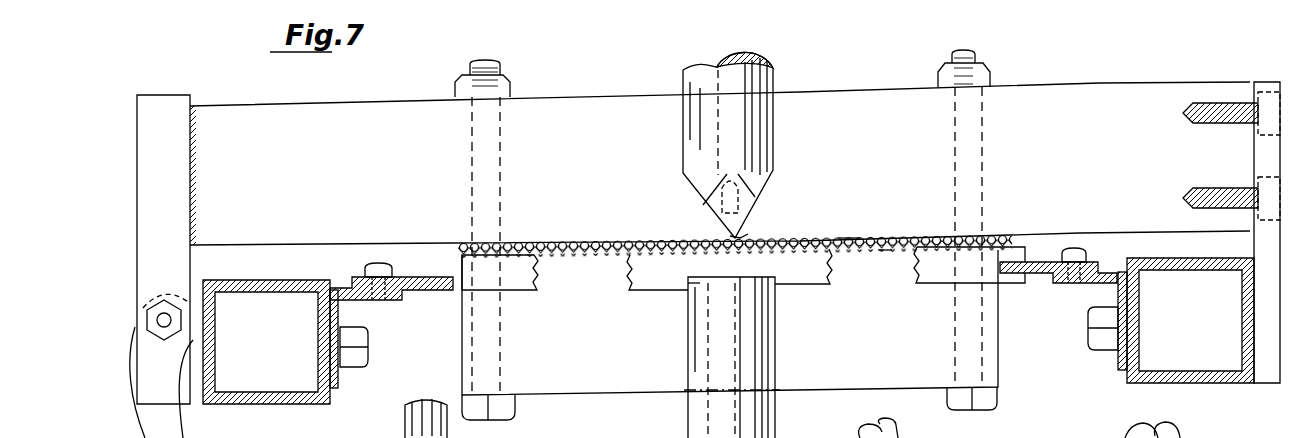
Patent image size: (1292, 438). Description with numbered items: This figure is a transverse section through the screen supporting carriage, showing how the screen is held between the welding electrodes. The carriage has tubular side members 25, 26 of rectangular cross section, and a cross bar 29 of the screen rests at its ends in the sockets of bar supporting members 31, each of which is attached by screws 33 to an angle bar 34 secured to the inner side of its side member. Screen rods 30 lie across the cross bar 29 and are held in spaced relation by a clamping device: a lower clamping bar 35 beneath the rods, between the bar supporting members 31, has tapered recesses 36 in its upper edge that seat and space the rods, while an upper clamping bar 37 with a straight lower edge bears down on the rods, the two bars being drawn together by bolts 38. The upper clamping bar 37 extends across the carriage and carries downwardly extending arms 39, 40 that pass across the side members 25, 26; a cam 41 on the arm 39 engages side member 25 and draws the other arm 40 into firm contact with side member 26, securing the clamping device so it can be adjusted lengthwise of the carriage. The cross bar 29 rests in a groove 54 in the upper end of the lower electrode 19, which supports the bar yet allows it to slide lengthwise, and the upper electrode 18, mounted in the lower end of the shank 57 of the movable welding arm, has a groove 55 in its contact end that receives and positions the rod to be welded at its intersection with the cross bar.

The upper electrode 18 is at (775, 135).
The lower electrode 19 is at (777, 325).
The side member 25 is at (305, 404).
The side member 26 is at (1190, 383).
The cross bar 29 is at (1008, 250).
The screen rod 30 is at (850, 238).
The bar supporting member 31 is at (425, 295).
The screw 33 is at (378, 263).
The angle bar 34 is at (1105, 288).
The clamping bar 35 is at (578, 380).
The tapered recess 36 is at (884, 250).
The clamping bar 37 is at (565, 117).
The bolt 38 is at (495, 190).
The arm 39 is at (185, 345).
The arm 40 is at (1270, 375).
The cam 41 is at (188, 302).
The groove 54 is at (690, 285).
The groove 55 is at (738, 236).
The shank 57 is at (884, 436).